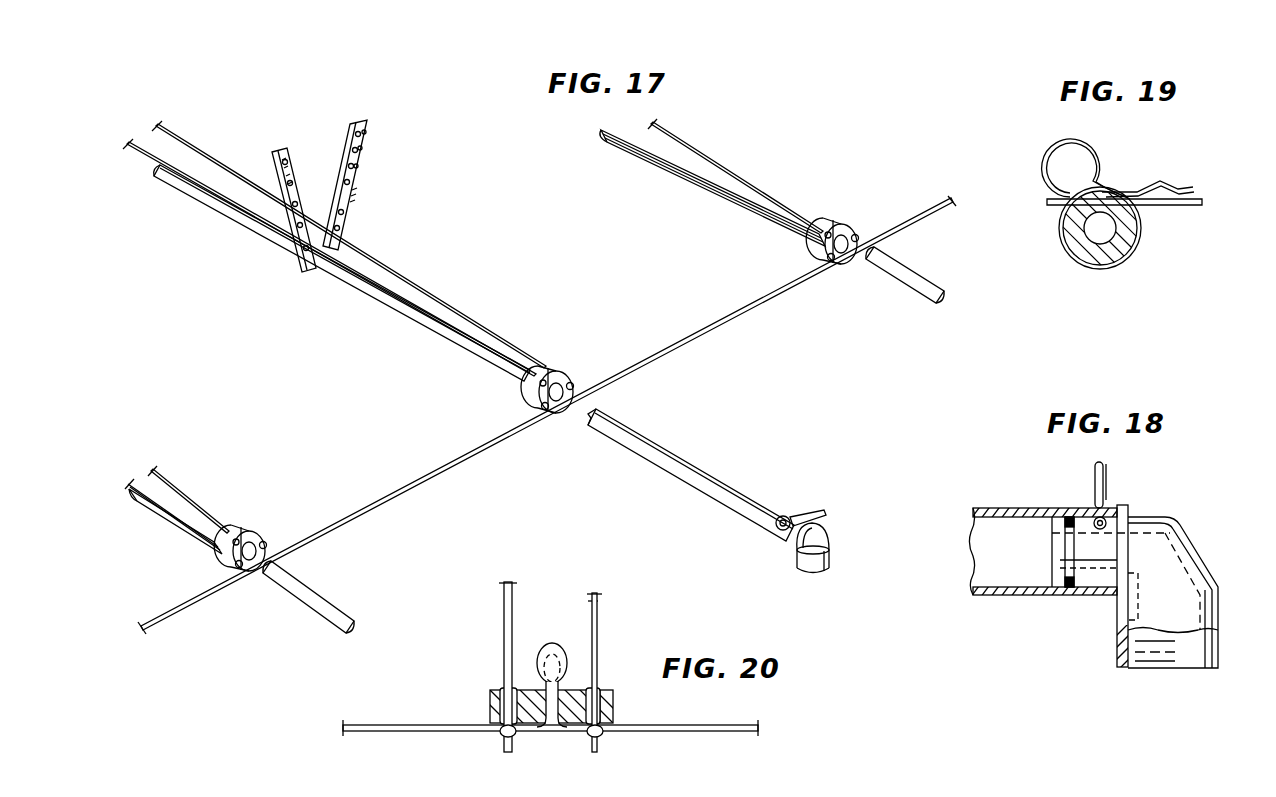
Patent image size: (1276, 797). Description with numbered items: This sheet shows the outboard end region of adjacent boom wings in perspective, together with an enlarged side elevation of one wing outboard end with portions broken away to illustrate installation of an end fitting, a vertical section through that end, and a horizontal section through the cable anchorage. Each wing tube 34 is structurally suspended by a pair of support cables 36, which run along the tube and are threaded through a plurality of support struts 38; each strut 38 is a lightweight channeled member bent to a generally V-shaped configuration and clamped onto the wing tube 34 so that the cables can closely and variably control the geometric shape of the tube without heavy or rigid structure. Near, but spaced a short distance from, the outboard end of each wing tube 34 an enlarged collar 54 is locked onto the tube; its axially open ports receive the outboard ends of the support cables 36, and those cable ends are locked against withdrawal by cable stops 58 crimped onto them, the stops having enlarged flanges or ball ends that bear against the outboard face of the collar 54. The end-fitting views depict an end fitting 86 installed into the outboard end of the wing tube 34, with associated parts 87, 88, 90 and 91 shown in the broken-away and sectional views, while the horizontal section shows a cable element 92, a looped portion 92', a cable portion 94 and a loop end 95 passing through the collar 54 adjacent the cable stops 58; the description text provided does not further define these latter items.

In FIG. 17, the wing tube 34 is at (628, 157).
In FIG. 19, the wing tube 34 is at (1066, 268).
In FIG. 18, the wing tube 34 is at (1008, 508).
In FIG. 17, the support cable 36 is at (400, 272).
In FIG. 20, the support cable 36 is at (504, 612).
In FIG. 17, the support strut 38 is at (345, 198).
In FIG. 17, the collar 54 is at (560, 368).
In FIG. 20, the collar 54 is at (490, 696).
In FIG. 17, the cable stop 58 is at (575, 388).
In FIG. 20, the cable stop 58 is at (500, 737).
In FIG. 17, the connector 86 is at (833, 530).
In FIG. 19, the connector 86 is at (1138, 249).
In FIG. 18, the connector 86 is at (1200, 526).
In FIG. 18, the spring pin 87 is at (1072, 590).
In FIG. 18, the hole 88 is at (1103, 529).
In FIG. 17, the clip 90 is at (784, 515).
In FIG. 19, the clip 90 is at (1103, 158).
In FIG. 18, the clip 90 is at (1099, 458).
In FIG. 17, the pipe end 91 is at (812, 574).
In FIG. 18, the pipe end 91 is at (1222, 646).
In FIG. 17, the cable 92 is at (547, 415).
In FIG. 20, the cable 92 is at (550, 742).
In FIG. 20, the cable loop 92' is at (591, 655).
In FIG. 20, the cable loop 94 is at (550, 730).
In FIG. 20, the loop end 95 is at (553, 643).